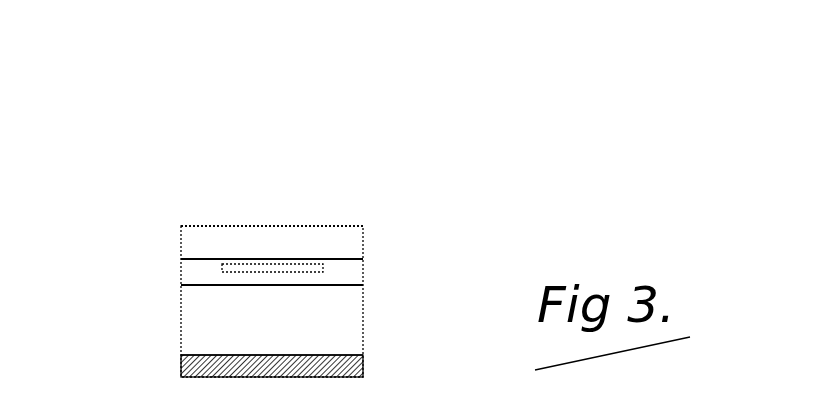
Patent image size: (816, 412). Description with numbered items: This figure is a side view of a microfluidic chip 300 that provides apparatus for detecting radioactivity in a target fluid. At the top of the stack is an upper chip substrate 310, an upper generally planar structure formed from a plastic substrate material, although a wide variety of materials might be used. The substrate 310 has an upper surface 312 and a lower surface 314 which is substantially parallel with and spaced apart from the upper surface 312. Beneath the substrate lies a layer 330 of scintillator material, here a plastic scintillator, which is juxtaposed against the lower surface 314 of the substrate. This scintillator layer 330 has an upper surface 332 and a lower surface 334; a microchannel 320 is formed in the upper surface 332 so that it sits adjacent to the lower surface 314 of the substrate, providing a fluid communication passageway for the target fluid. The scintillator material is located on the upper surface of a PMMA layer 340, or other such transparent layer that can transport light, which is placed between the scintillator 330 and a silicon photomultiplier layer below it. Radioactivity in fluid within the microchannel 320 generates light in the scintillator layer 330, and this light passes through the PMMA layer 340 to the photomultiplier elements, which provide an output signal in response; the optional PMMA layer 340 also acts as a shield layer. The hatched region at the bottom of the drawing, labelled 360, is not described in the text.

The chip 300 is at (380, 112).
The upper chip substrate 310 is at (178, 234).
The upper surface 312 is at (338, 224).
The lower surface 314 is at (340, 260).
The microchannel 320 is at (240, 252).
The layer of scintillator material 330 is at (178, 273).
The upper surface 332 is at (327, 259).
The lower surface 334 is at (344, 286).
The PMMA layer 340 is at (194, 325).
The substrate 360 is at (178, 369).